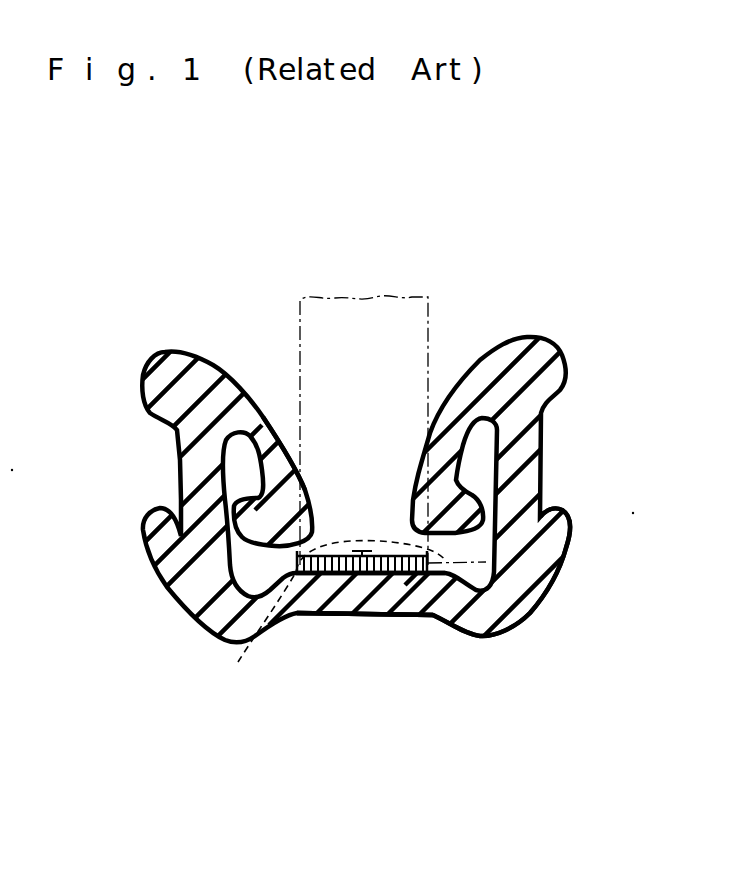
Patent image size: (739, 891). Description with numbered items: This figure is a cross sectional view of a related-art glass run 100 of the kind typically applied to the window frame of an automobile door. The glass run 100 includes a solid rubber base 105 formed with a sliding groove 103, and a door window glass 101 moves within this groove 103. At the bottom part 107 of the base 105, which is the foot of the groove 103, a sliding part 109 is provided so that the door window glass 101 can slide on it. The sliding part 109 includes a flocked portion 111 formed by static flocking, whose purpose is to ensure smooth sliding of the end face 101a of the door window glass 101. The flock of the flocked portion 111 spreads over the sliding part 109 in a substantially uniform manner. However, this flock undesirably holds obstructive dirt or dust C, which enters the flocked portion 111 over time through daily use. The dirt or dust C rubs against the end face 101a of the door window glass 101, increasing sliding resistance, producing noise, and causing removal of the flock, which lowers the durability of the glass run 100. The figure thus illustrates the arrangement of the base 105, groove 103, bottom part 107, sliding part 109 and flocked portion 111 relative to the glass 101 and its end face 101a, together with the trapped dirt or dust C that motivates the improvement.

The glass run 100 is at (527, 473).
The door window glass 101 is at (417, 332).
The end face of the door window glass 101a is at (486, 562).
The sliding groove 103 is at (292, 412).
The solid rubber base 105 is at (480, 622).
The bottom part of the base 107 is at (345, 576).
The sliding part 109 is at (318, 576).
The flocked portion 111 is at (422, 576).
The dirt or dust C is at (331, 614).